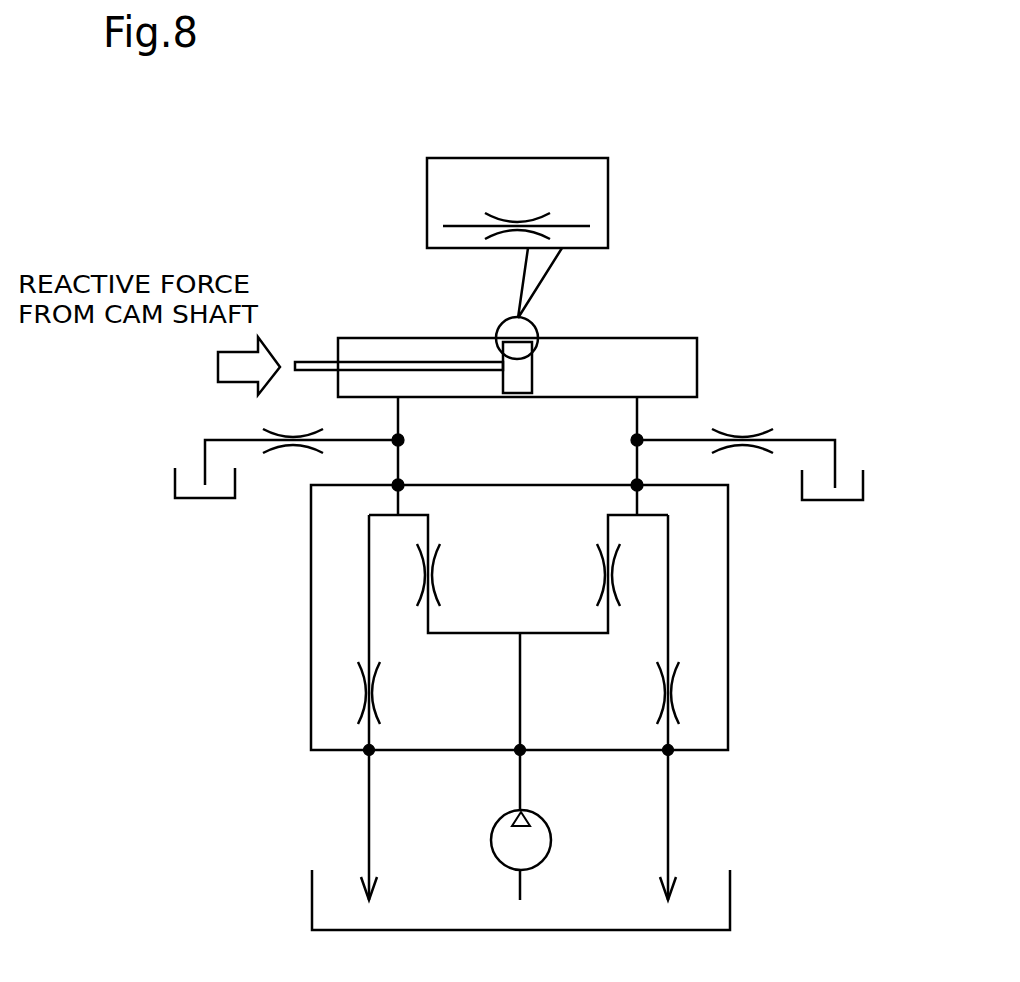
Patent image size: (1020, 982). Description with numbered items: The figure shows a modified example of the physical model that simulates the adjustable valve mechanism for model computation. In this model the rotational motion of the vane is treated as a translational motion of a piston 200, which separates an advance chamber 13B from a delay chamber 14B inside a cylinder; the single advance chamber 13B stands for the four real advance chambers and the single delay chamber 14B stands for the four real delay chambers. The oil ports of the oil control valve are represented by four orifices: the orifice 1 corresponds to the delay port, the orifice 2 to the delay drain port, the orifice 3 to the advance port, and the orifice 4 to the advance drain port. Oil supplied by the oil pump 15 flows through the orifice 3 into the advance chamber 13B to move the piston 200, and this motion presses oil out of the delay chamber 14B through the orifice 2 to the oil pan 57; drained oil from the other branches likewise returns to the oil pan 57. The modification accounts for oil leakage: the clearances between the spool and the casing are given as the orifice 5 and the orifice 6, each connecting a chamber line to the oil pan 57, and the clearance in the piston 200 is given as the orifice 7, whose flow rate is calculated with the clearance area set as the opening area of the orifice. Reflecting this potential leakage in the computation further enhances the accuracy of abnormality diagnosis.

The orifice 1 is at (417, 573).
The orifice 2 is at (367, 692).
The orifice 3 is at (613, 577).
The orifice 4 is at (675, 693).
The orifice 5 is at (297, 436).
The orifice 6 is at (742, 438).
The orifice 7 is at (517, 258).
The advance chamber 13B is at (650, 355).
The delay chamber 14B is at (397, 353).
The oil pump 15 is at (549, 826).
The oil pan 57 is at (175, 487).
The piston 200 is at (518, 380).